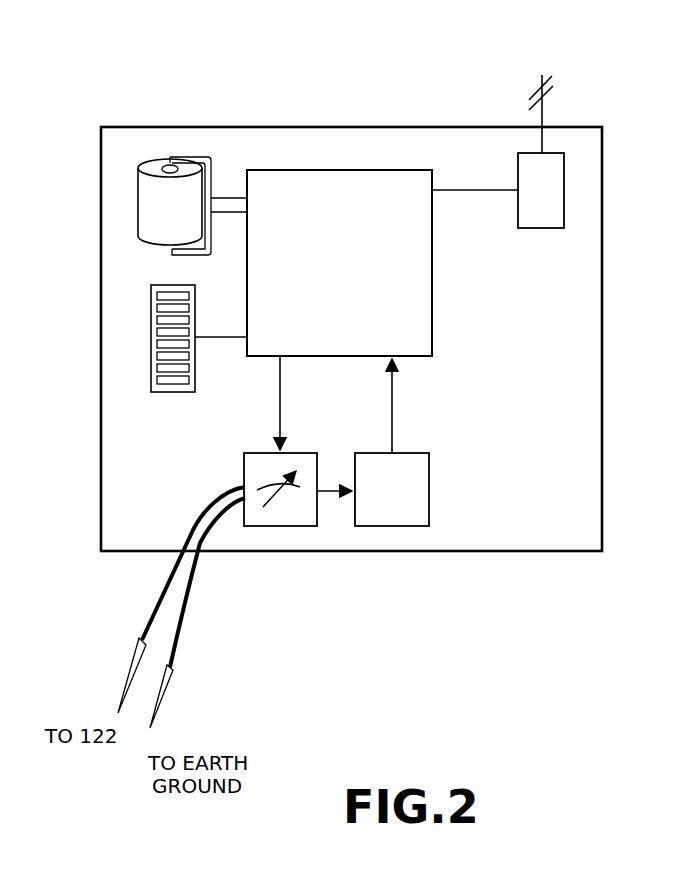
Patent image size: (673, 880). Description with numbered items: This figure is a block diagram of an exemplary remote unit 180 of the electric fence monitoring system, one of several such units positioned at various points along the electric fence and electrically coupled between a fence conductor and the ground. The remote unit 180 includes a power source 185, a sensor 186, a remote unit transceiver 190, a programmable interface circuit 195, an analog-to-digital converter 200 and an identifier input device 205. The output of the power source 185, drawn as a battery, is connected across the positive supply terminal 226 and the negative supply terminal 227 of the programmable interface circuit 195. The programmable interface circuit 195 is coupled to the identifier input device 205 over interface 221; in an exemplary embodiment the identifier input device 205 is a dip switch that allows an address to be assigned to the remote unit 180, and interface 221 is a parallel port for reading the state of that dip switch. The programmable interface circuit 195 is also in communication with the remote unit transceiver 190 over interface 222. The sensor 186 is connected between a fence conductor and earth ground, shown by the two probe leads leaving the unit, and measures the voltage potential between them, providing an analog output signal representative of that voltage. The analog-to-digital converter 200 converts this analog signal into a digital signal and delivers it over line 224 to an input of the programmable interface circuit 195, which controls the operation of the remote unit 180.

The remote unit 180 is at (89, 63).
The power source 185 is at (140, 222).
The sensor 186 is at (277, 527).
The remote unit transceiver 190 is at (565, 163).
The programmable interface circuit 195 is at (340, 168).
The analog-to-digital converter 200 is at (388, 527).
The identifier input device 205 is at (148, 380).
The interface 221 is at (213, 337).
The interface 222 is at (480, 190).
The A/D output line 224 is at (387, 422).
The positive supply terminal 226 is at (192, 153).
The negative supply terminal 227 is at (193, 254).